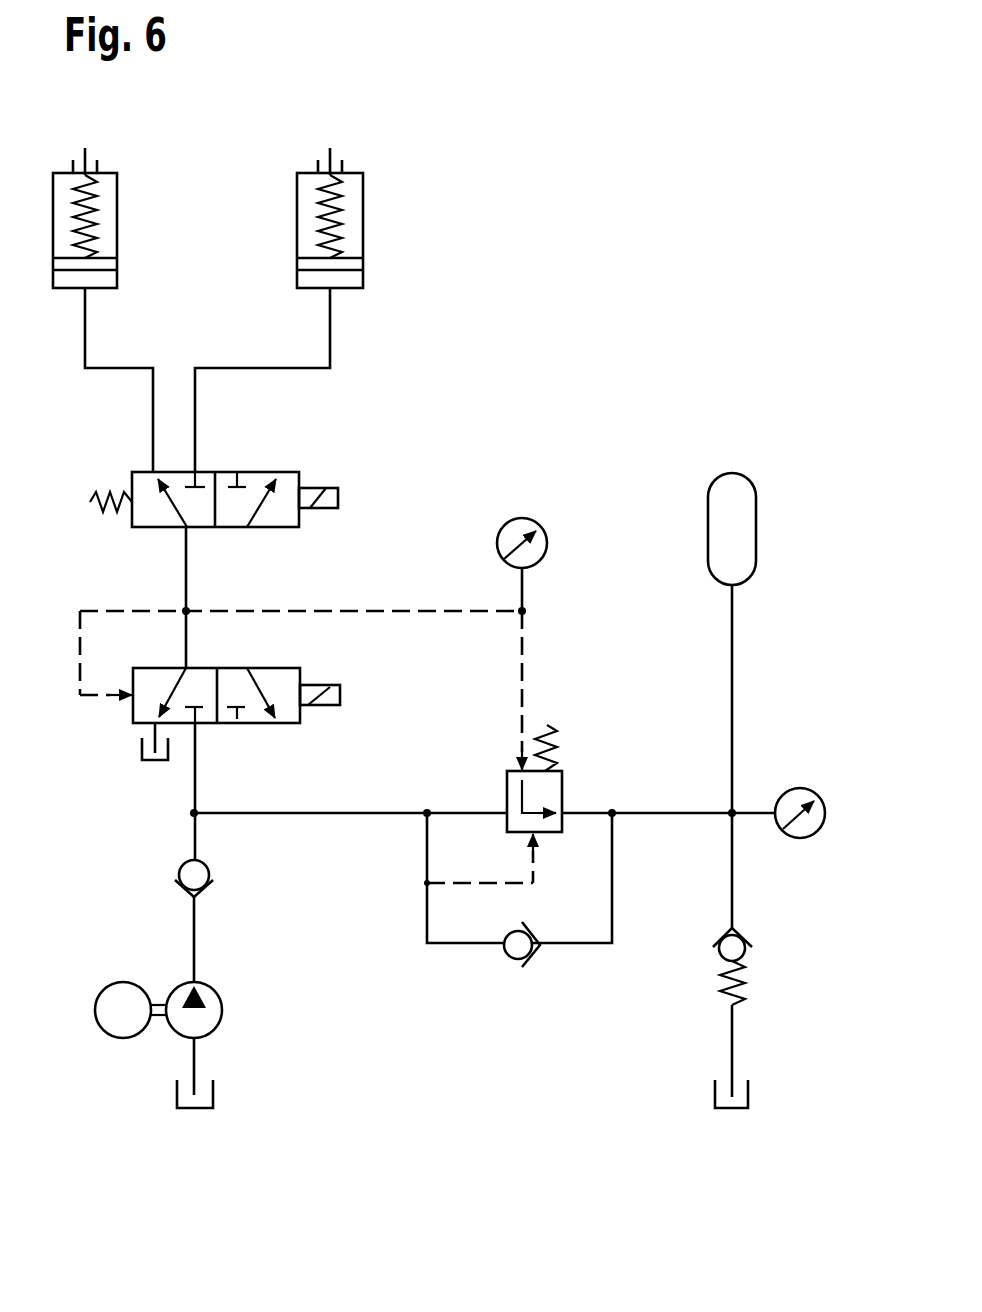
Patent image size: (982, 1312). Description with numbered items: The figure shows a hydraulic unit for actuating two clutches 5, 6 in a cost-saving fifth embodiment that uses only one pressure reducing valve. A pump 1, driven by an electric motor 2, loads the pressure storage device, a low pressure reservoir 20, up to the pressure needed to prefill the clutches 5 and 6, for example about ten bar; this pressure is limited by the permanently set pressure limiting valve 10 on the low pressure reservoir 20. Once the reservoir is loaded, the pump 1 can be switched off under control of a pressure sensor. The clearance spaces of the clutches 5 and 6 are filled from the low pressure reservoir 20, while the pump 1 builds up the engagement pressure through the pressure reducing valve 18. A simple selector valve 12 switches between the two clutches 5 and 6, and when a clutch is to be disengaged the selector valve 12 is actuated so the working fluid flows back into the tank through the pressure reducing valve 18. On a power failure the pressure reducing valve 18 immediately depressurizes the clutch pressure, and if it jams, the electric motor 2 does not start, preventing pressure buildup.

The pump 1 is at (206, 1020).
The electric motor 2 is at (95, 1010).
The clutch 5 is at (300, 187).
The clutch 6 is at (113, 193).
The pressure limiting valve 10 is at (552, 790).
The selector valve 12 is at (291, 470).
The pressure reducing valve 18 is at (146, 684).
The low pressure reservoir 20 is at (736, 530).